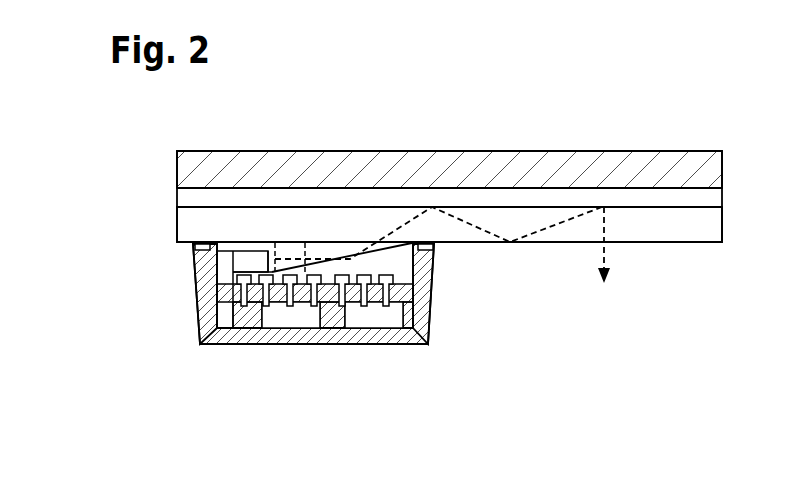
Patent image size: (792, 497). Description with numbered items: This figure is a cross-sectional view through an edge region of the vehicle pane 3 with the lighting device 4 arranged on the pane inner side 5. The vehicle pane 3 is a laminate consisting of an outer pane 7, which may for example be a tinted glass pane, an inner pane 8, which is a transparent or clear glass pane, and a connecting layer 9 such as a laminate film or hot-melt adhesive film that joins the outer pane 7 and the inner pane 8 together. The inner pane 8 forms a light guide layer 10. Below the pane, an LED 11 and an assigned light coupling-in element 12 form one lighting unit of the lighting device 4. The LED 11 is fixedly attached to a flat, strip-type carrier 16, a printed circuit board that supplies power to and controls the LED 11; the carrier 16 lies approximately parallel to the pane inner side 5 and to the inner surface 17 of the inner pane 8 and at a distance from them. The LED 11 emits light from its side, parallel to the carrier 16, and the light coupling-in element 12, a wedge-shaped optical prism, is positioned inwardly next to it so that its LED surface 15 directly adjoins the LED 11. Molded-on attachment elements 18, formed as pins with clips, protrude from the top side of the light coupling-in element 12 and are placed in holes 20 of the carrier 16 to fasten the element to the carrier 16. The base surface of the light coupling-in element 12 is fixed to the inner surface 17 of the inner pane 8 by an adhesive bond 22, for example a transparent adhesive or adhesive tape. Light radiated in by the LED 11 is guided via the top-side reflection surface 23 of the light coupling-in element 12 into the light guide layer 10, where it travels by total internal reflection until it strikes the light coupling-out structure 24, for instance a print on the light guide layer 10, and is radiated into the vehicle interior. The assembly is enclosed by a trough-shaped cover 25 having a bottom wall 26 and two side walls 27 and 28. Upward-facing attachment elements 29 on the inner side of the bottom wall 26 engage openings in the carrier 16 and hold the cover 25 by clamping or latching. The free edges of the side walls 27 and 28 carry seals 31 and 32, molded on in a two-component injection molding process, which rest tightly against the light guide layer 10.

The vehicle pane 3 is at (546, 150).
The lighting device 4 is at (190, 329).
The pane inner side 5 is at (683, 250).
The outer pane 7 is at (445, 172).
The inner pane 8 is at (383, 226).
The connecting layer 9 is at (483, 200).
The light guide layer 10 is at (513, 244).
The LED 11 is at (232, 273).
The light coupling-in element 12 is at (316, 252).
The LED surface 15 is at (253, 255).
The carrier 16 is at (223, 318).
The inner surface 17 is at (638, 244).
The attachment elements 18 is at (283, 312).
The holes 20 is at (308, 306).
The adhesive bond 22 is at (352, 250).
The reflection surface 23 is at (350, 263).
The light coupling-out structure 24 is at (653, 207).
The cover 25 is at (291, 348).
The bottom wall 26 is at (233, 337).
The side wall 27 is at (203, 280).
The side wall 28 is at (420, 313).
The attachment elements 29 is at (237, 262).
The seal 31 is at (200, 247).
The seal 32 is at (422, 247).